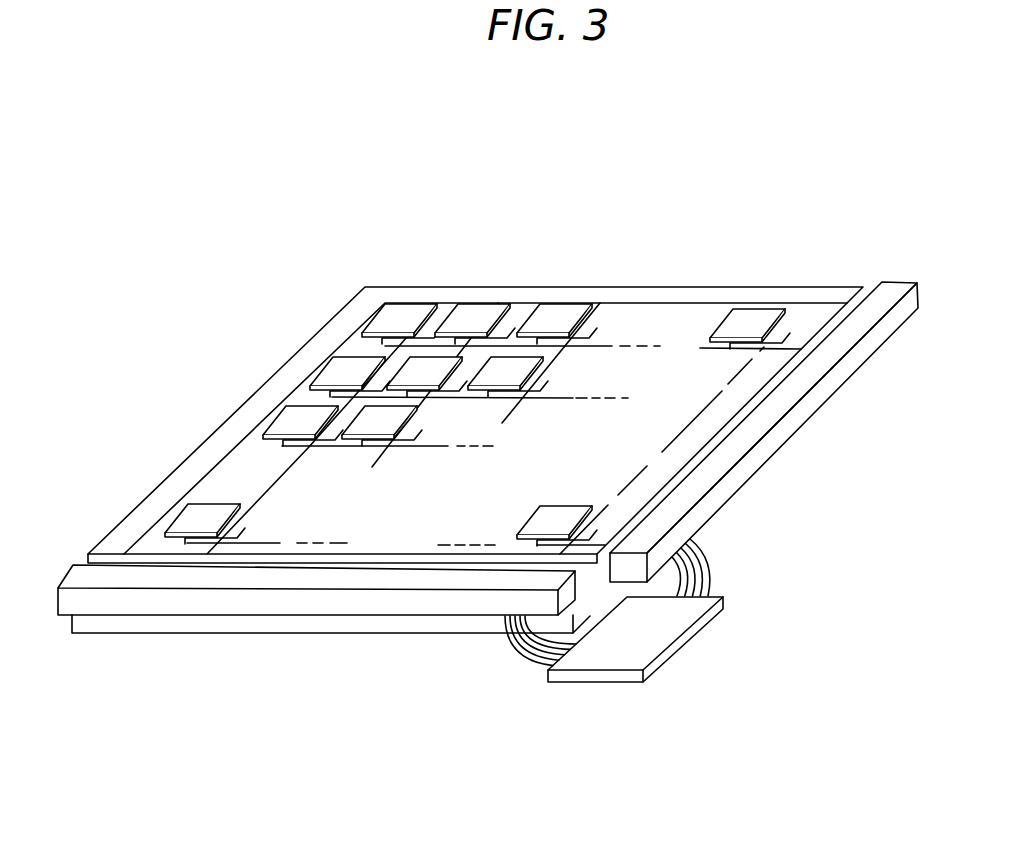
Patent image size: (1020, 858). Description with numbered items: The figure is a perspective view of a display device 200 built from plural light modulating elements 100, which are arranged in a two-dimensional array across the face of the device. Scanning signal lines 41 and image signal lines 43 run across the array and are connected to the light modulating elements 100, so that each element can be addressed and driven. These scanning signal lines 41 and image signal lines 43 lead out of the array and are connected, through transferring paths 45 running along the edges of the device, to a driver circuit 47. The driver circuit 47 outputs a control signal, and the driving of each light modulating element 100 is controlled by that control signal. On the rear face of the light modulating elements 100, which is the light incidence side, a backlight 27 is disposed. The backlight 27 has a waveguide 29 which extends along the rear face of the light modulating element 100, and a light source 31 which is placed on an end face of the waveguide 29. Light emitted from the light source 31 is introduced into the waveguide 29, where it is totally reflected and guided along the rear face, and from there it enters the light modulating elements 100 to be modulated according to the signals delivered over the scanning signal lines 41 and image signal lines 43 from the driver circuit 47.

The display device 200 is at (690, 214).
The light modulating element 100 is at (557, 315).
The scanning signal lines 41 is at (573, 398).
The image signal lines 43 is at (382, 453).
The transferring paths 45 is at (252, 598).
The driver circuit 47 is at (670, 620).
The waveguide 29 is at (607, 597).
The backlight 27 is at (437, 640).
The light source 31 is at (338, 627).